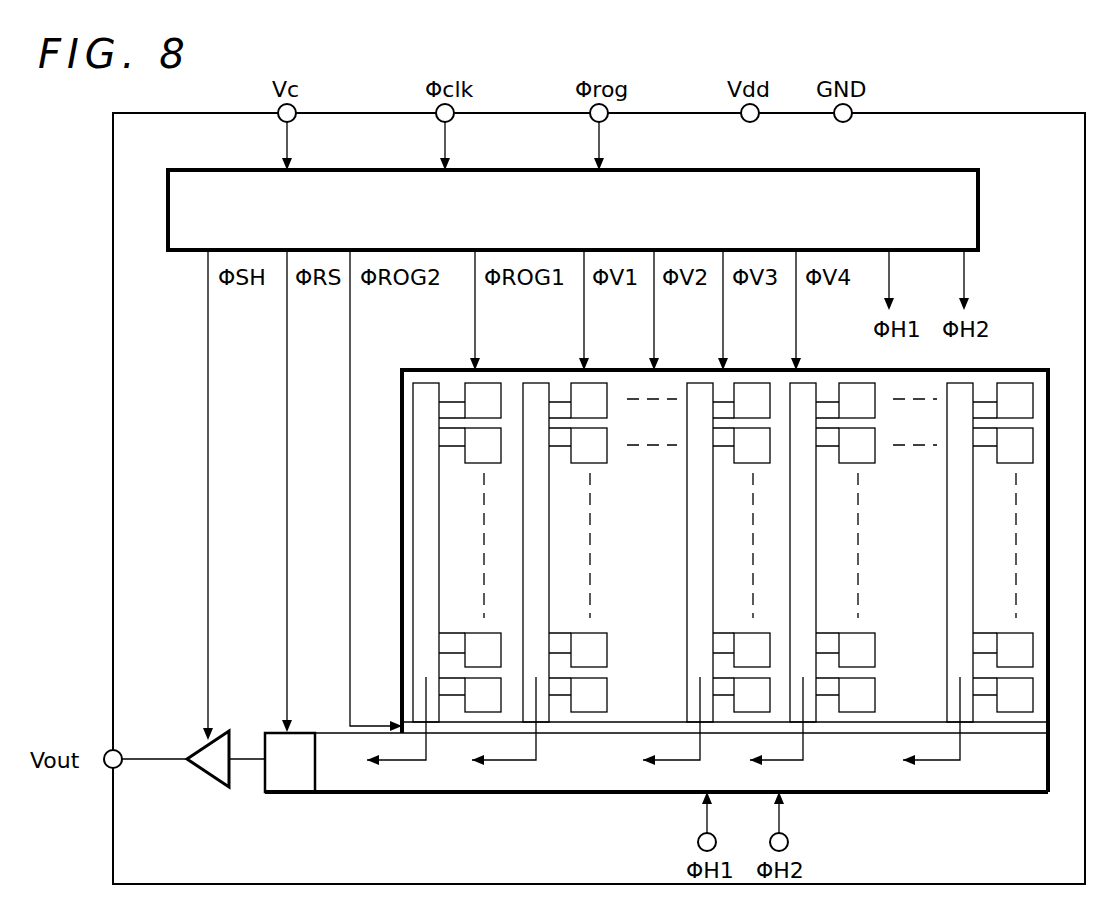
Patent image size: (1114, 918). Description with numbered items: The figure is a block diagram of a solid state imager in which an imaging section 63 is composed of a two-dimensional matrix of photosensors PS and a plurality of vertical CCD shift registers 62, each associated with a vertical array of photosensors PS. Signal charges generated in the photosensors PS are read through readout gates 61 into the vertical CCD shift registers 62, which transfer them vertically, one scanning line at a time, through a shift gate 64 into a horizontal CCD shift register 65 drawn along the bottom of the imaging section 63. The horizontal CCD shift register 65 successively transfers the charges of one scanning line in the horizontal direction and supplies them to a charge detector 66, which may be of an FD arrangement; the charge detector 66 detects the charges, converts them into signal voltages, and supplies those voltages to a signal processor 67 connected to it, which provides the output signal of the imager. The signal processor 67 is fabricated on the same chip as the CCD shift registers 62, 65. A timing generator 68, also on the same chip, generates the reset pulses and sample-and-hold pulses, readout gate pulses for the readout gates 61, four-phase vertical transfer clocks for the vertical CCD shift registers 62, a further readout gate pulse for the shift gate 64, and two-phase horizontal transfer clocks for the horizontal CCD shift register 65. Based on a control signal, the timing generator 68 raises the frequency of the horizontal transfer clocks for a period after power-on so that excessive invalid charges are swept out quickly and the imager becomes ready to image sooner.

The readout gate 61 is at (720, 390).
The vertical CCD shift register 62 is at (957, 398).
The imaging section 63 is at (998, 364).
The shift gate 64 is at (405, 727).
The horizontal CCD shift register 65 is at (920, 793).
The charge detector 66 is at (290, 765).
The signal processor 67 is at (198, 750).
The timing generator 68 is at (872, 170).
The photosensor PS is at (748, 395).